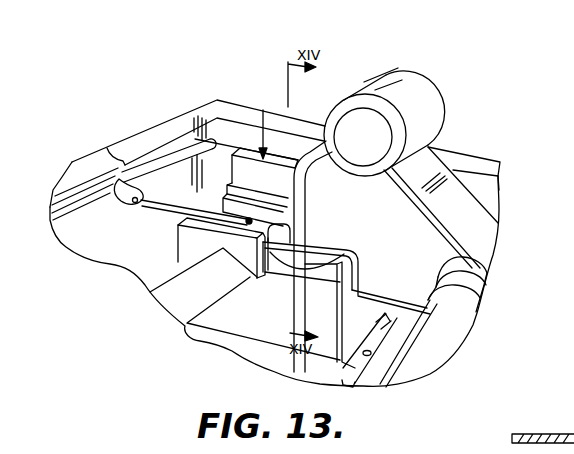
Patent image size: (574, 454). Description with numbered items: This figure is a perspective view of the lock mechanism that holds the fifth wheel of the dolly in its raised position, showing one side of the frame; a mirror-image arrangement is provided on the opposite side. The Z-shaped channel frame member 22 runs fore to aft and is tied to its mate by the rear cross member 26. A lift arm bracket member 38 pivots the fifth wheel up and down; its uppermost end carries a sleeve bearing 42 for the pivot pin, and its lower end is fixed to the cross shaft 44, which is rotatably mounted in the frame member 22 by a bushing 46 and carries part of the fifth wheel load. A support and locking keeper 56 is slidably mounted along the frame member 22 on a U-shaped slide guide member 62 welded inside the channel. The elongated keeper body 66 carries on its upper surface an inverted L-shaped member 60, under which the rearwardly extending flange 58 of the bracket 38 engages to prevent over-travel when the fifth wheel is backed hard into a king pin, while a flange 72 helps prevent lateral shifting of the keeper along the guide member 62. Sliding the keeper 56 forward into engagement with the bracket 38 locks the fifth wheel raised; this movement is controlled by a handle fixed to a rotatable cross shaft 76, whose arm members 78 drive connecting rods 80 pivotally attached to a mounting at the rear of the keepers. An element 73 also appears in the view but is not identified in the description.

The channel frame member 22 is at (463, 162).
The rear cross member 26 is at (83, 165).
The lift arm bracket member 38 is at (477, 228).
The sleeve bearing 42 is at (370, 125).
The cross shaft 44 is at (442, 332).
The bushing 46 is at (468, 290).
The support and locking keeper 56 is at (259, 106).
The rearwardly extending flange 58 is at (290, 243).
The inverted L-shaped member 60 is at (285, 210).
The U-shaped slide guide member 62 is at (363, 330).
The keeper body 66 is at (287, 263).
The flange 72 is at (210, 227).
The floor plate 73 is at (178, 308).
The cross shaft 76 is at (162, 160).
The arm member 78 is at (120, 190).
The connecting rod 80 is at (150, 205).